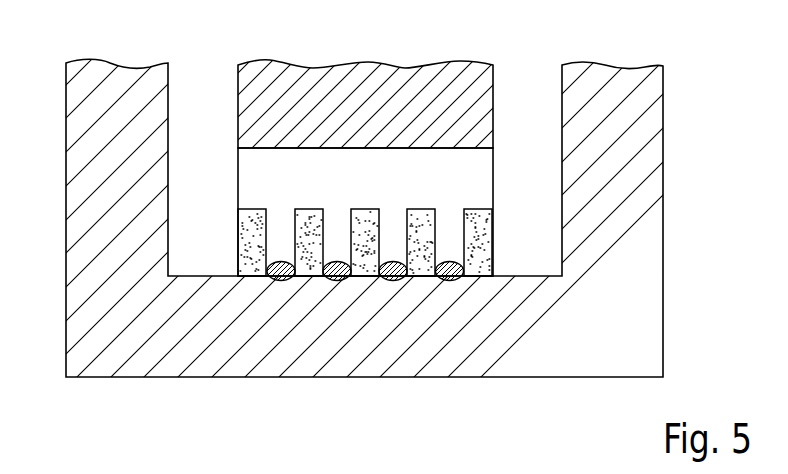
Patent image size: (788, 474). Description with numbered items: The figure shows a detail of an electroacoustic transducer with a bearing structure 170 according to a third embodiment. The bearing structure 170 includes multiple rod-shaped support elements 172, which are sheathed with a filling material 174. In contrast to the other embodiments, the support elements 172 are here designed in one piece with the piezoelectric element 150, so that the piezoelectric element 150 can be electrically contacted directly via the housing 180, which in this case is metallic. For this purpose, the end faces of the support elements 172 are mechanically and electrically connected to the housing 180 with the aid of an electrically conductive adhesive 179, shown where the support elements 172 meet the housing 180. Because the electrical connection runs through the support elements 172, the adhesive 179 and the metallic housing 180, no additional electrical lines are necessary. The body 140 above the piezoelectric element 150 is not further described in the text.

The cap / cover body 140 is at (370, 82).
The piezoelectric element 150 is at (475, 170).
The bearing structure 170 is at (214, 226).
The rod-shaped support elements 172 is at (450, 237).
The filling material 174 is at (311, 216).
The electrically conductive adhesive 179 is at (462, 270).
The housing 180 is at (375, 377).